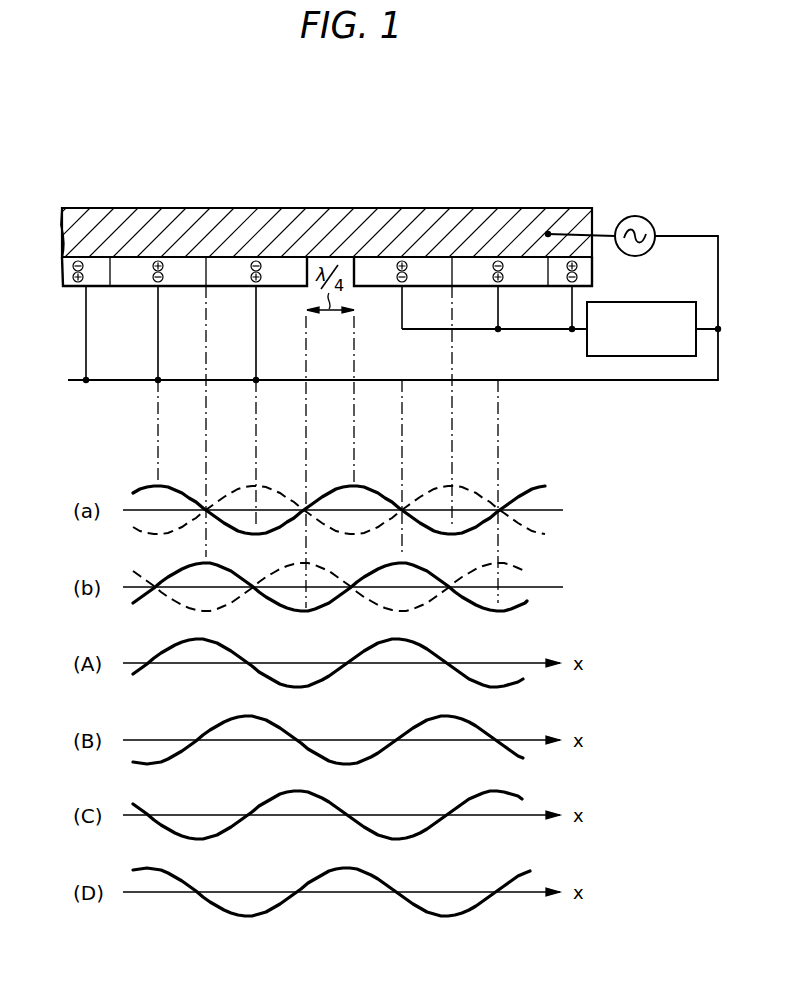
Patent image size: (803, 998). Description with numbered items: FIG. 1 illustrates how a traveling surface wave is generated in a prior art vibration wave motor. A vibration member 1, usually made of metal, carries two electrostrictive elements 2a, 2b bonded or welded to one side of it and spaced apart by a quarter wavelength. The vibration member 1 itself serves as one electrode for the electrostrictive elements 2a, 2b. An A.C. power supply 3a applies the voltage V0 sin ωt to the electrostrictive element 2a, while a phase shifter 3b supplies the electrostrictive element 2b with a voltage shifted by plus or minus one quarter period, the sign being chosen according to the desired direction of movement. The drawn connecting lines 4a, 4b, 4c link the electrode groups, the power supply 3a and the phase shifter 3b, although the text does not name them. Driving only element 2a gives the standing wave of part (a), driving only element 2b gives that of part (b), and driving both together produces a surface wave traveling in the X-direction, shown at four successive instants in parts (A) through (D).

The vibration member 1 is at (128, 216).
The electrostrictive element 2a is at (65, 287).
The electrostrictive element 2b is at (380, 287).
The A.C. power supply 3a is at (645, 221).
The phase shifter 3b is at (645, 302).
The first lead line 4a is at (636, 381).
The second lead line 4b is at (520, 330).
The common lead line 4c is at (609, 232).